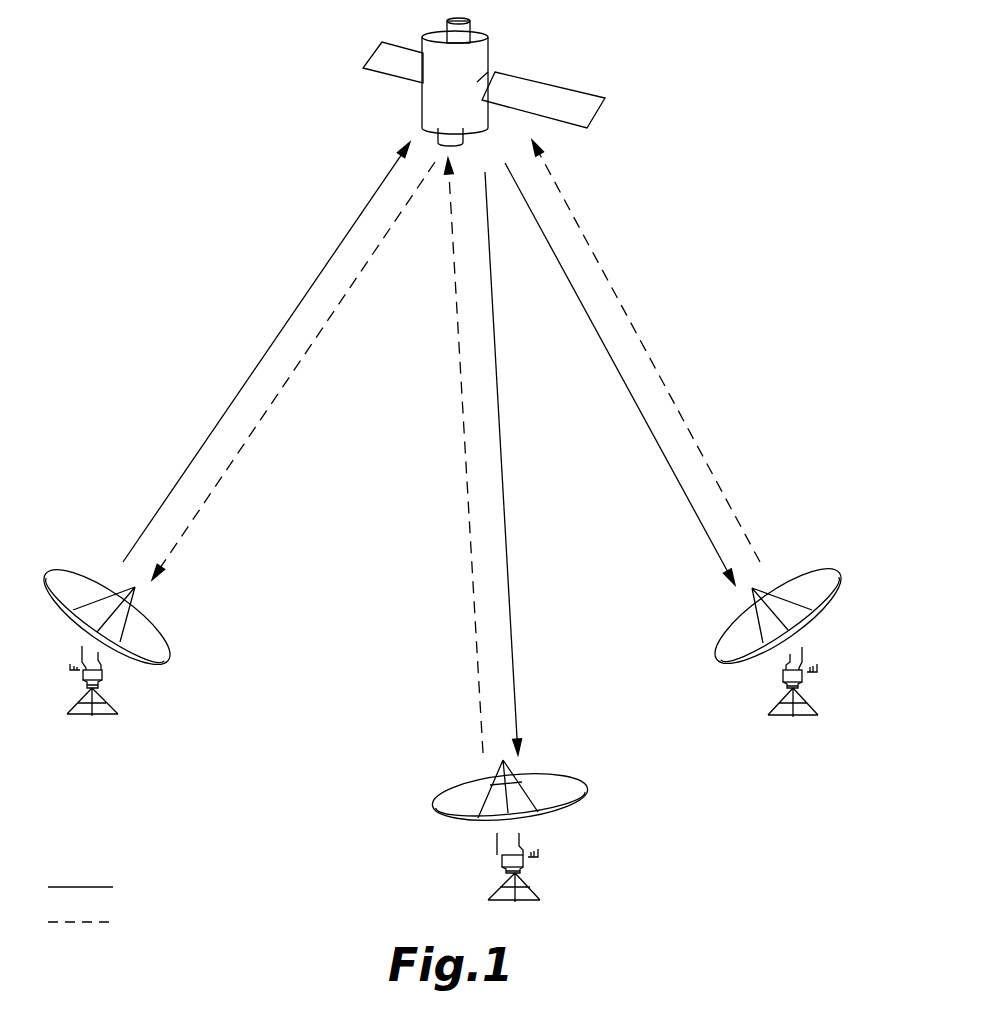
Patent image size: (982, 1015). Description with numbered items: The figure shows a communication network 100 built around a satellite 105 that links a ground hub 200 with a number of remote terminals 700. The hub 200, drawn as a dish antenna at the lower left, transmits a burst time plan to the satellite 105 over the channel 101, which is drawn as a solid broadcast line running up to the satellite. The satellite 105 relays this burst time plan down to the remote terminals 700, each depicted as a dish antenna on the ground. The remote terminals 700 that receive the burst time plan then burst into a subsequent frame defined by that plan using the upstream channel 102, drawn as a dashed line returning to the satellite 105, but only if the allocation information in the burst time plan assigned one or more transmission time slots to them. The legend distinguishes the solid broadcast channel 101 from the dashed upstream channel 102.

The communication network 100 is at (208, 48).
The satellite 105 is at (487, 40).
The channel 101 is at (248, 380).
The upstream channel 102 is at (258, 422).
The hub 200 is at (140, 665).
The remote terminal 700 is at (740, 668).